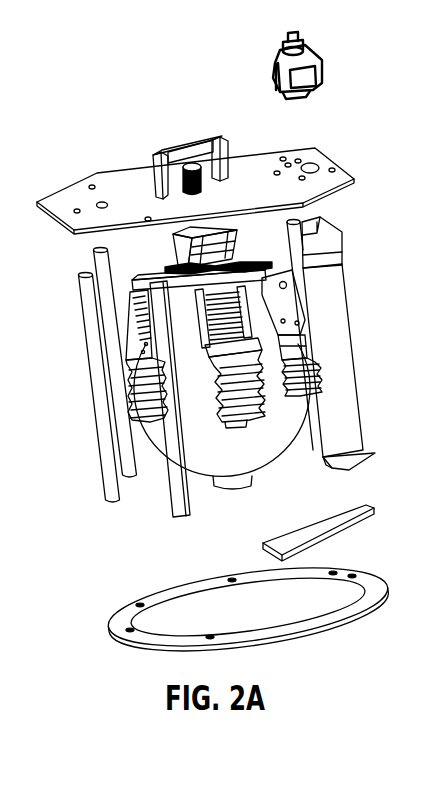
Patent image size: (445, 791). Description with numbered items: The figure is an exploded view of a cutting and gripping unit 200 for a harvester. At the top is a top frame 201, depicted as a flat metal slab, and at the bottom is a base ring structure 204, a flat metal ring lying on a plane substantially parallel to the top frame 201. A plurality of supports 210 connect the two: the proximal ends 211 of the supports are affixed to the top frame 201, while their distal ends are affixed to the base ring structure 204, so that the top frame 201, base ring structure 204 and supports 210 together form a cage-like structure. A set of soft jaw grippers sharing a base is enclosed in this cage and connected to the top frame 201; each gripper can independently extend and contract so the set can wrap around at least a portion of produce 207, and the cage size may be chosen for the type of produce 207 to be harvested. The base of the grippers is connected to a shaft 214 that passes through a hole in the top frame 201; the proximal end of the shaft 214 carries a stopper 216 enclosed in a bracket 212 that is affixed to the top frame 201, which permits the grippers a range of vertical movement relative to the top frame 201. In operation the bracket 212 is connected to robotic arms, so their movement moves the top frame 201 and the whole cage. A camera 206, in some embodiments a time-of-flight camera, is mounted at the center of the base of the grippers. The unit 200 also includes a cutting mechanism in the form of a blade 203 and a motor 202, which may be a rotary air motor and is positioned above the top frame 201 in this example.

The cutting and gripping unit 200 is at (114, 44).
The top frame 201 is at (58, 205).
The motor 202 is at (322, 74).
The blade 203 is at (320, 528).
The base ring structure 204 is at (373, 587).
The camera 206 is at (237, 236).
The produce 207 is at (167, 447).
The supports 210 is at (112, 333).
The proximal ends of the supports 211 is at (82, 275).
The bracket 212 is at (205, 140).
The shaft 214 is at (152, 163).
The stopper 216 is at (190, 164).